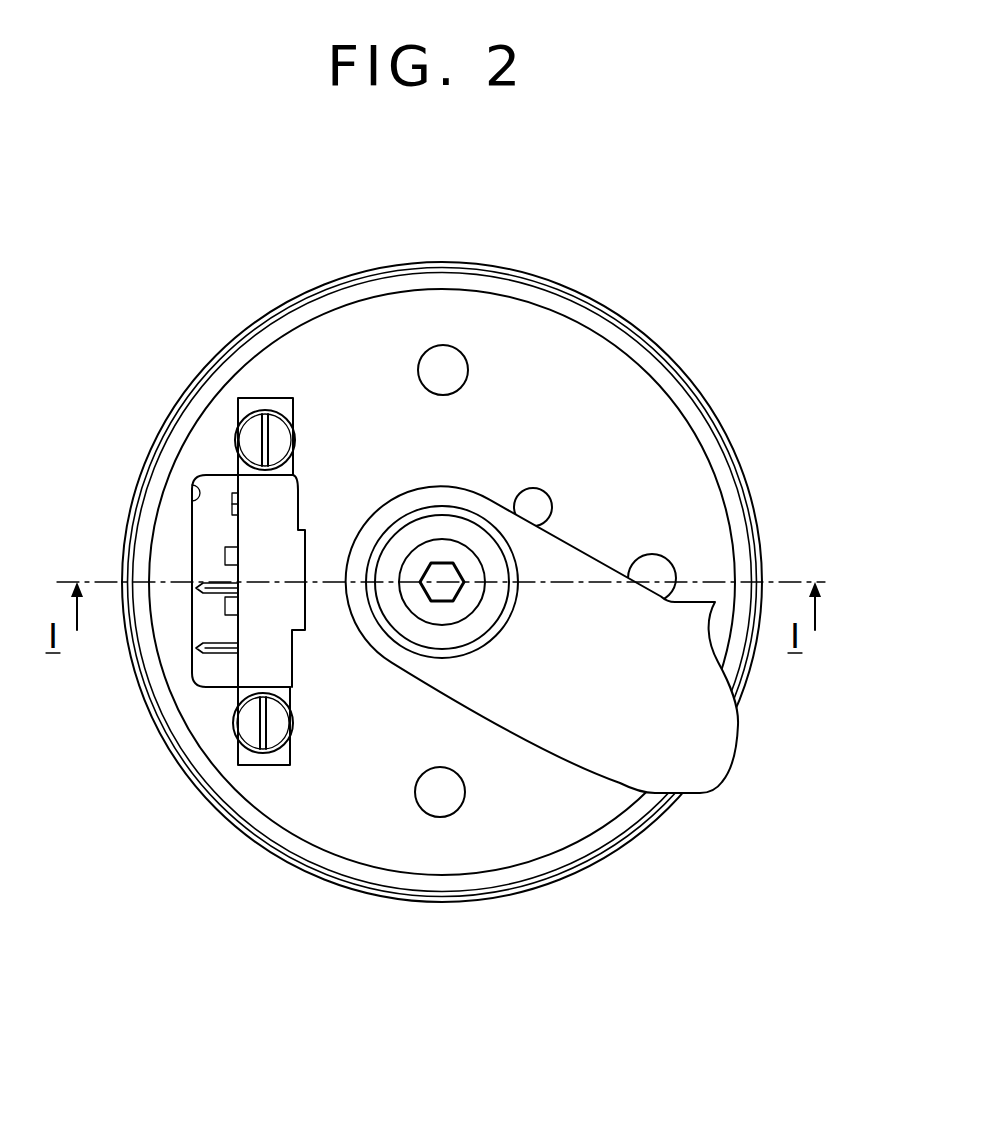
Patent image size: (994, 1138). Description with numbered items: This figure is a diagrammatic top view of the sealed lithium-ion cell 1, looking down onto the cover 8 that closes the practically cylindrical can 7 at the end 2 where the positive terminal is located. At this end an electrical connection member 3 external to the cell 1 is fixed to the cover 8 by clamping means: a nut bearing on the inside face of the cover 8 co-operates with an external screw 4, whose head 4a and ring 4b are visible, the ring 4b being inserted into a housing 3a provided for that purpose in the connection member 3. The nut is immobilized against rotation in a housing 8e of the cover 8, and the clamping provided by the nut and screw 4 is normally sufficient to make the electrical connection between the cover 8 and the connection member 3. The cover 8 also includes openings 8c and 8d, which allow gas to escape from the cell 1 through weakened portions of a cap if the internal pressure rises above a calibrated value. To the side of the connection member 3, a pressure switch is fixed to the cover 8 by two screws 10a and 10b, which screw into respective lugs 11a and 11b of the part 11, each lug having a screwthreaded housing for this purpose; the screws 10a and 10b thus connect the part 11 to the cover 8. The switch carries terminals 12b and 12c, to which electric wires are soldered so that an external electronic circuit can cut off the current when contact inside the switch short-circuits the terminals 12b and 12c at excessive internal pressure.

The cell 1 is at (790, 477).
The end 2 is at (660, 334).
The electrical connection member 3 is at (746, 757).
The housing 3a is at (508, 613).
The screw 4 is at (395, 508).
The head 4a is at (442, 545).
The ring 4b is at (473, 533).
The can 7 is at (707, 405).
The cover 8 is at (300, 352).
The opening 8c is at (195, 482).
The opening 8d is at (423, 378).
The housing 8e is at (543, 493).
The screw 10a is at (283, 440).
The screw 10b is at (283, 724).
The part 11 is at (312, 623).
The lug 11a is at (285, 405).
The lug 11b is at (277, 765).
The terminal 12b is at (213, 585).
The terminal 12c is at (213, 653).